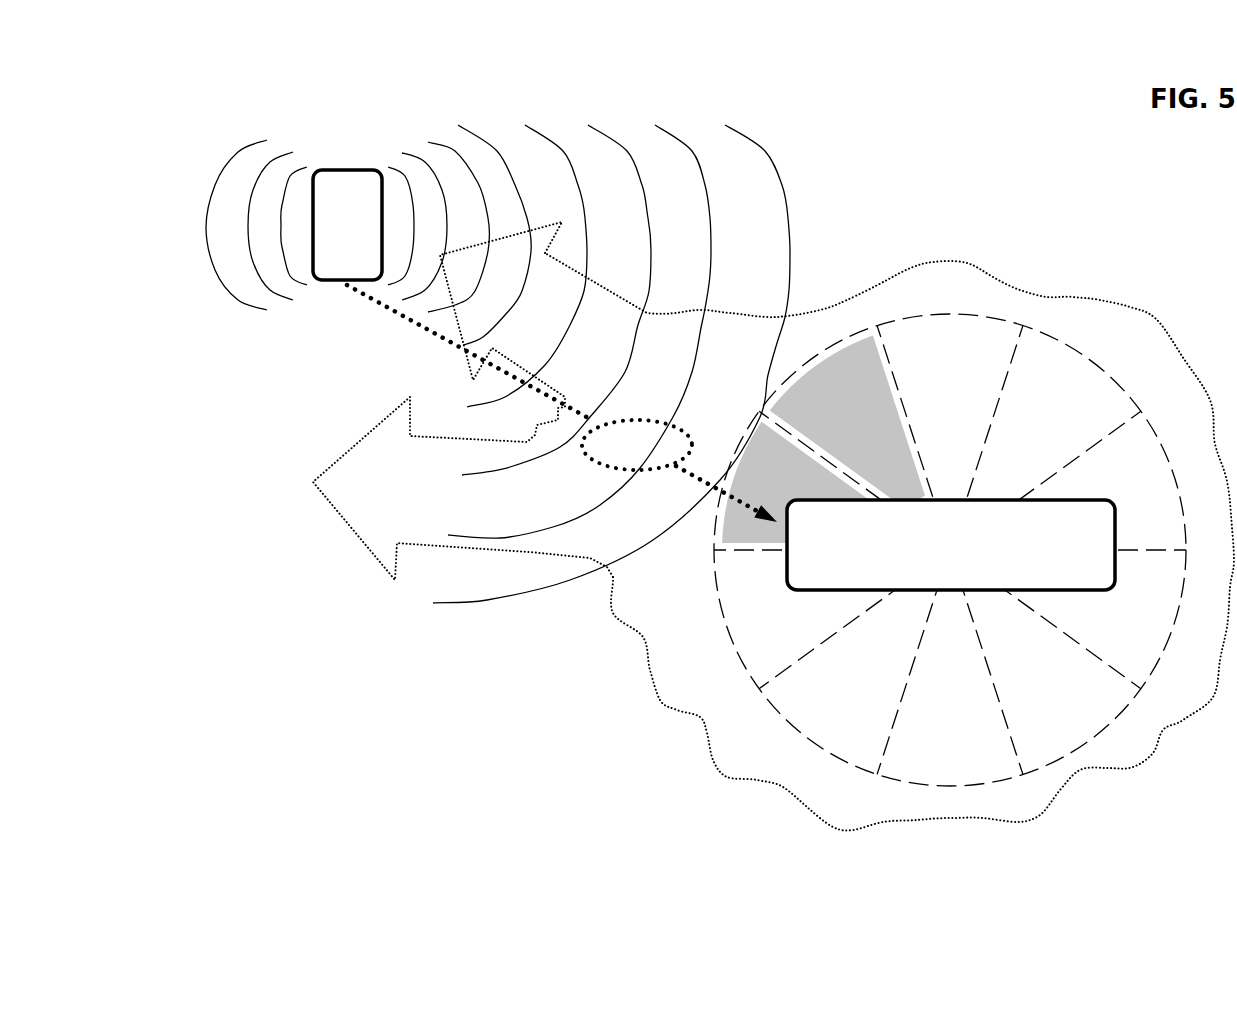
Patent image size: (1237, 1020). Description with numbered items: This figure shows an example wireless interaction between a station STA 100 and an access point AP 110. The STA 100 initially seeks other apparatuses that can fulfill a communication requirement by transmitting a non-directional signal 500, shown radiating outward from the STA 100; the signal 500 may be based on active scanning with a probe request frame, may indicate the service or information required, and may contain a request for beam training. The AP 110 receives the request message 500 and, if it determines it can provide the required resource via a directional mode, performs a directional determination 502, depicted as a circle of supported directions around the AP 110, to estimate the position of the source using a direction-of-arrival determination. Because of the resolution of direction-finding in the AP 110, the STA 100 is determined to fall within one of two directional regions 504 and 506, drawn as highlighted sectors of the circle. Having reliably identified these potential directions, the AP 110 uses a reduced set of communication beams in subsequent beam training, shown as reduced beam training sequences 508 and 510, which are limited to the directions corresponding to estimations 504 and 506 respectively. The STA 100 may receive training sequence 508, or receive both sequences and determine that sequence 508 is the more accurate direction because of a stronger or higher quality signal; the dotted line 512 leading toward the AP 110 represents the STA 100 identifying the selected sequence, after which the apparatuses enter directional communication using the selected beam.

The signal 500 is at (225, 170).
The STA 100 is at (344, 170).
The AP 110 is at (900, 498).
The directional determination 502 is at (1112, 376).
The directional region 504 is at (900, 399).
The directional region 506 is at (736, 558).
The beam training sequence 508 is at (658, 313).
The beam training sequence 510 is at (532, 557).
The transmission path 512 is at (400, 328).